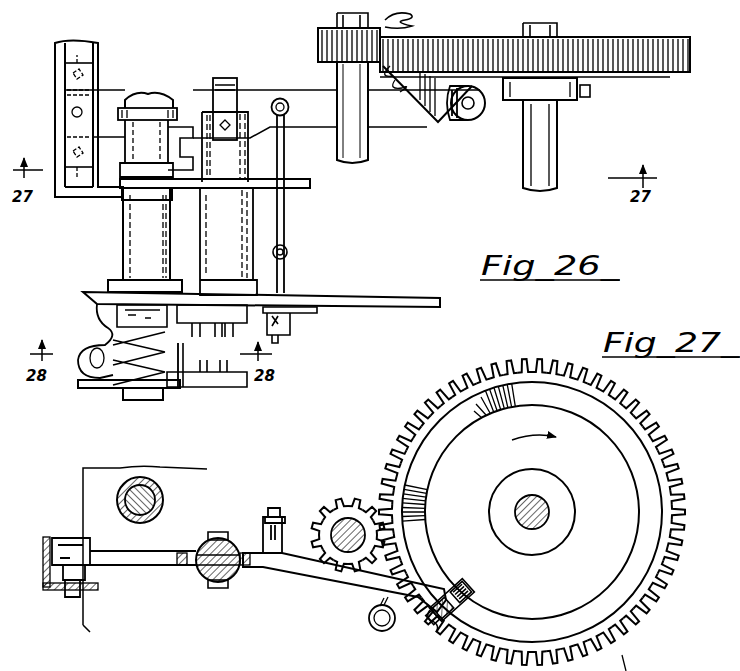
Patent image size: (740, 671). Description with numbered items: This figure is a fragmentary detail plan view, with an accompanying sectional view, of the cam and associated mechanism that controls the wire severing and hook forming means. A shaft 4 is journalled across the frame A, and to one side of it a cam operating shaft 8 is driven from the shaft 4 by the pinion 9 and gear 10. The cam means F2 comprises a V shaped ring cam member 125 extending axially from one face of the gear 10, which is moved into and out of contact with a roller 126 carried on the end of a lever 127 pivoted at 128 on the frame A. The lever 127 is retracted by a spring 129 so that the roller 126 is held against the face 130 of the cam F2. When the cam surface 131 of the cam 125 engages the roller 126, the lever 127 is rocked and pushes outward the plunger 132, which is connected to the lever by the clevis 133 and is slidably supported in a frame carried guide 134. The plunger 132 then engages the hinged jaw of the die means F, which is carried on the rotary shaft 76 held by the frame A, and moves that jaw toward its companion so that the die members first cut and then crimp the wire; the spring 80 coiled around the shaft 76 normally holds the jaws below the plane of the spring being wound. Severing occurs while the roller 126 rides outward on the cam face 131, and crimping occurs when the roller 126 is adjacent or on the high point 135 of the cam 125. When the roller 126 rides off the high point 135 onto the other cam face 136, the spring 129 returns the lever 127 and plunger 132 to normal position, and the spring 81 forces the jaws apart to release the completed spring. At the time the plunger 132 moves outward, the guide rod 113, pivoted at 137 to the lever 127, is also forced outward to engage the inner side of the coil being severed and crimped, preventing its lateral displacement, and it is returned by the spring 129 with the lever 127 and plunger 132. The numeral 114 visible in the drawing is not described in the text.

In FIG. 26, the shaft 4 is at (356, 165).
In FIG. 27, the shaft 4 is at (332, 506).
In FIG. 26, the cam operating shaft 8 is at (541, 192).
In FIG. 26, the pinion 9 is at (320, 41).
In FIG. 27, the pinion 9 is at (317, 518).
In FIG. 26, the gear 10 is at (690, 62).
In FIG. 27, the gear 10 is at (683, 470).
In FIG. 26, the rotary shaft 76 is at (140, 238).
In FIG. 27, the rotary shaft 76 is at (165, 500).
In FIG. 26, the spring 80 is at (110, 389).
In FIG. 26, the spring 81 is at (82, 345).
In FIG. 26, the guide rod 113 is at (285, 215).
In FIG. 27, the guide rod 113 is at (267, 516).
In FIG. 27, the lever 114 is at (223, 664).
In FIG. 26, the V shaped ring cam member 125 is at (430, 125).
In FIG. 27, the V shaped ring cam member 125 is at (455, 452).
In FIG. 26, the roller 126 is at (466, 124).
In FIG. 27, the roller 126 is at (480, 606).
In FIG. 26, the lever 127 is at (312, 96).
In FIG. 27, the lever 127 is at (332, 571).
In FIG. 26, the pivot 128 is at (72, 112).
In FIG. 27, the pivot 128 is at (72, 540).
In FIG. 26, the spring 129 is at (414, 18).
In FIG. 27, the spring 129 is at (378, 627).
In FIG. 27, the face 130 is at (423, 562).
In FIG. 26, the cam surface 131 is at (476, 112).
In FIG. 27, the cam surface 131 is at (456, 418).
In FIG. 26, the plunger 132 is at (236, 106).
In FIG. 27, the plunger 132 is at (205, 580).
In FIG. 26, the clevis 133 is at (222, 96).
In FIG. 26, the guide 134 is at (228, 203).
In FIG. 26, the high point 135 is at (442, 118).
In FIG. 27, the high point 135 is at (427, 427).
In FIG. 26, the cam face 136 is at (418, 105).
In FIG. 27, the cam face 136 is at (427, 453).
In FIG. 26, the pivot 137 is at (286, 114).
In FIG. 26, the frame A is at (80, 291).
In FIG. 26, the die means F is at (220, 394).
In FIG. 26, the cam means F2 is at (604, 82).
In FIG. 27, the cam means F2 is at (624, 437).